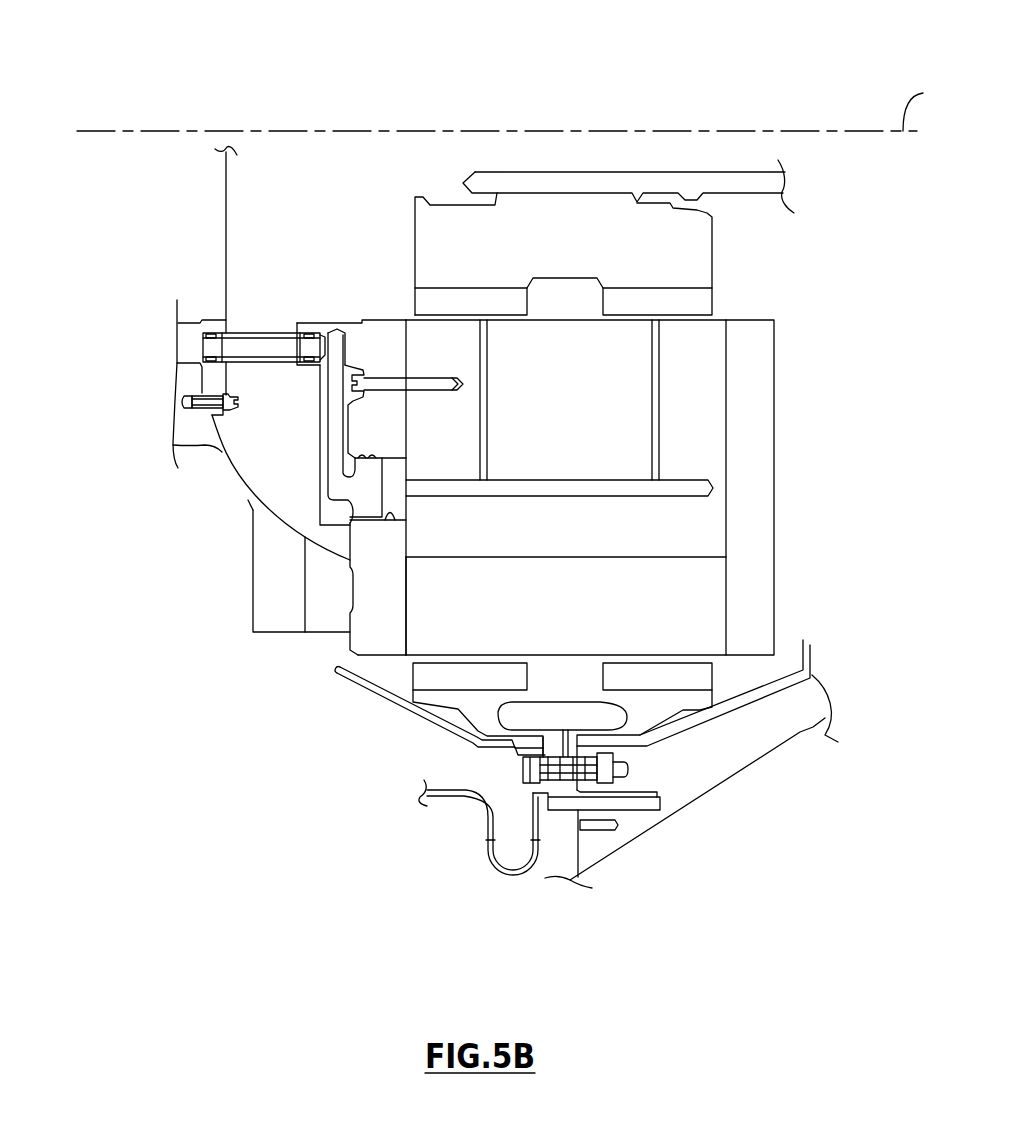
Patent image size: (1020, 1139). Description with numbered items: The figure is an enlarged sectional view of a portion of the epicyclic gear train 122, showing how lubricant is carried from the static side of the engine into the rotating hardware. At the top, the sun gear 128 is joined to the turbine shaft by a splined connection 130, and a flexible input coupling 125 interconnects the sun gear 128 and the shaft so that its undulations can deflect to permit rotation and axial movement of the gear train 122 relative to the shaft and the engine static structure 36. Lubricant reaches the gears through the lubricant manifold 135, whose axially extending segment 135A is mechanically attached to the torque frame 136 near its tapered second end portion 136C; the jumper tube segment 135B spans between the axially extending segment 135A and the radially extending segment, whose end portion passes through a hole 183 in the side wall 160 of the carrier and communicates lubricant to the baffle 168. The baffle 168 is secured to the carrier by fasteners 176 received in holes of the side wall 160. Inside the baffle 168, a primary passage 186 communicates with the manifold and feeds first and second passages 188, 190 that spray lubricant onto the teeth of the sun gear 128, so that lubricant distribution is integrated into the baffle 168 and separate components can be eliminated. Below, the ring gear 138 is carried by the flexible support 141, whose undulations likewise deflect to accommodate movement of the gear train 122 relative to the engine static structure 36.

The epicyclic gear train 122 is at (91, 64).
The flexible input coupling 125 is at (743, 160).
The sun gear 128 is at (714, 268).
The splined connection 130 is at (578, 200).
The lubricant manifold 135 is at (206, 291).
The axially extending segment 135A is at (192, 320).
The jumper tube segment 135B is at (247, 333).
The torque frame 136 is at (267, 610).
The second end portion 136C is at (318, 460).
The ring gear 138 is at (463, 722).
The flexible support 141 is at (492, 878).
The side wall 160 is at (350, 640).
The baffle 168 is at (737, 409).
The fastener 176 is at (393, 377).
The hole 183 is at (405, 577).
The primary passage 186 is at (415, 497).
The first passage 188 is at (487, 435).
The second passage 190 is at (555, 497).
The engine static structure 36 is at (708, 808).